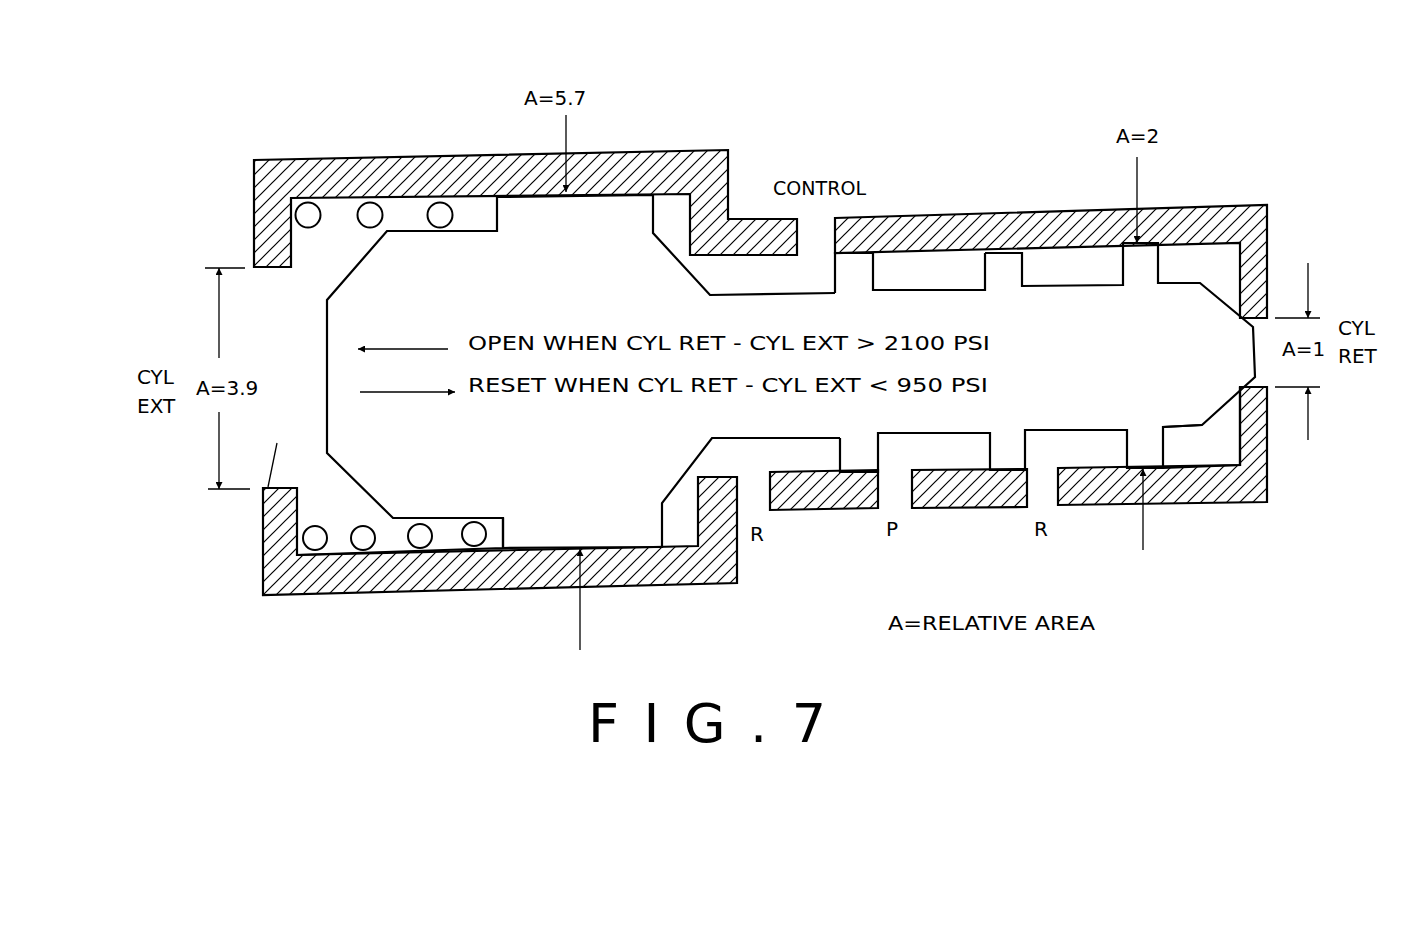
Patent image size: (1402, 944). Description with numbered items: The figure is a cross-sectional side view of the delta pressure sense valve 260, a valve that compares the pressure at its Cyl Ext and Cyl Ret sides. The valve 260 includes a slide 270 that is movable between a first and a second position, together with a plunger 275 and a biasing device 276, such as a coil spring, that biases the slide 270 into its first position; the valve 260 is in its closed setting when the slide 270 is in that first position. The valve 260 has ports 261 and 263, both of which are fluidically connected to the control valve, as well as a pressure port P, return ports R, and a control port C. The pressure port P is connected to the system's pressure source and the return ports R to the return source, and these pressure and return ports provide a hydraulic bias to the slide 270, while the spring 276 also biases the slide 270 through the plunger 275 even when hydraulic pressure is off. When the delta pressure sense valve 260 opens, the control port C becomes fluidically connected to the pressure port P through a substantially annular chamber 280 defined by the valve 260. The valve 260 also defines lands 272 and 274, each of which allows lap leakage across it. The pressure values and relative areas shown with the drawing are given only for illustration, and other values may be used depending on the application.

The delta pressure sense valve 260 is at (731, 323).
The port 261 is at (1265, 347).
The port 263 is at (263, 508).
The slide 270 is at (1045, 306).
The land 272 is at (492, 542).
The land 274 is at (1165, 442).
The plunger 275 is at (540, 290).
The biasing device 276 is at (363, 538).
The annular chamber 280 is at (908, 270).